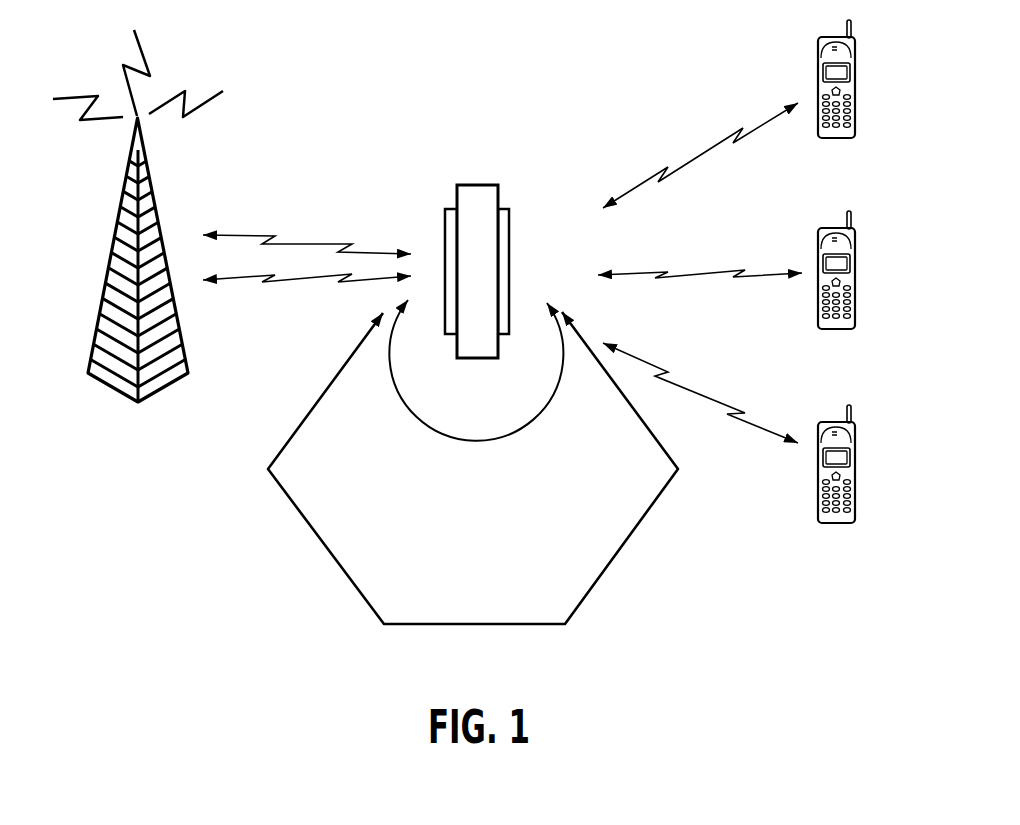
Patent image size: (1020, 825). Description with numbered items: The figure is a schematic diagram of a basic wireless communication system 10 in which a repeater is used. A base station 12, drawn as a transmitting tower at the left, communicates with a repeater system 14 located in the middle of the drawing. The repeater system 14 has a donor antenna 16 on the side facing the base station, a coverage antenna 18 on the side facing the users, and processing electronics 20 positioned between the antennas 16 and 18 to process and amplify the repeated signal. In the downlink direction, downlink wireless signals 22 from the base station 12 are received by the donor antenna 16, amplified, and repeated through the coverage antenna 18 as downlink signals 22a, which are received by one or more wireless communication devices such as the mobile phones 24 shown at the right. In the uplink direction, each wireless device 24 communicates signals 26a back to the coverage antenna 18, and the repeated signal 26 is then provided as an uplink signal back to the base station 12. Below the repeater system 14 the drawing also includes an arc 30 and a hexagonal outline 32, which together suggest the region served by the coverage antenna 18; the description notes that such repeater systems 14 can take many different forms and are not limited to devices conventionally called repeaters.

The wireless communication system 10 is at (573, 57).
The base station 12 is at (150, 184).
The repeater system 14 is at (481, 208).
The donor antenna 16 is at (446, 228).
The coverage antenna 18 is at (510, 262).
The processing electronics 20 is at (494, 185).
The downlink wireless signals 22 is at (318, 243).
The downlink signals 22a is at (715, 146).
The mobile phones 24 is at (855, 80).
The repeated uplink signal 26 is at (305, 283).
The uplink signals 26a is at (688, 275).
The coverage area 30 is at (456, 441).
The coverage cell 32 is at (324, 549).